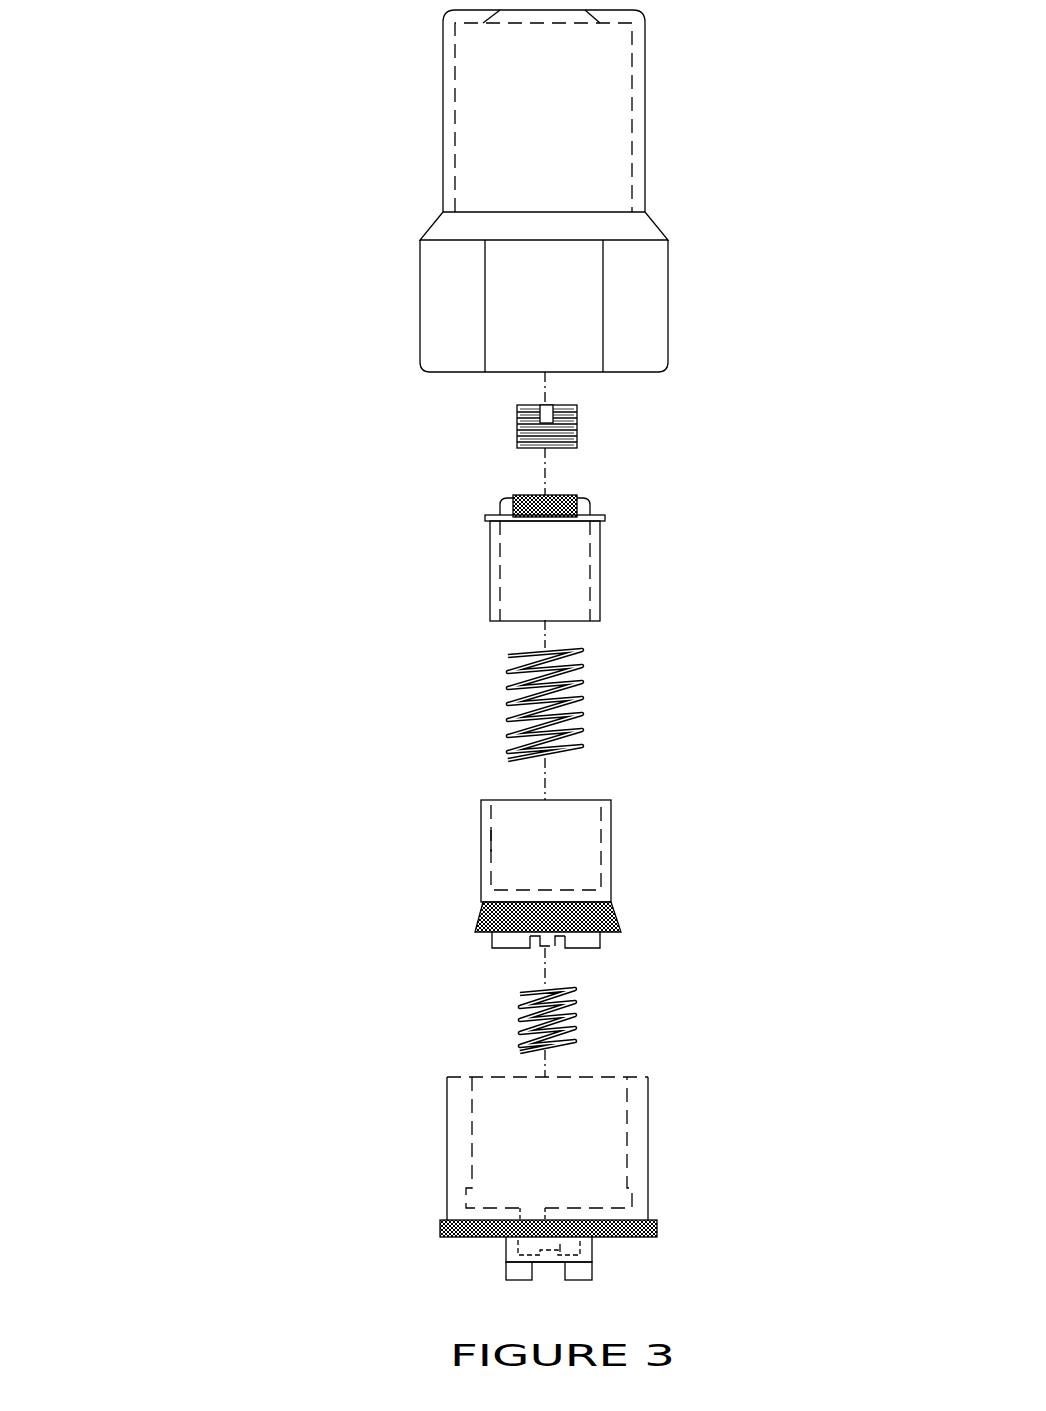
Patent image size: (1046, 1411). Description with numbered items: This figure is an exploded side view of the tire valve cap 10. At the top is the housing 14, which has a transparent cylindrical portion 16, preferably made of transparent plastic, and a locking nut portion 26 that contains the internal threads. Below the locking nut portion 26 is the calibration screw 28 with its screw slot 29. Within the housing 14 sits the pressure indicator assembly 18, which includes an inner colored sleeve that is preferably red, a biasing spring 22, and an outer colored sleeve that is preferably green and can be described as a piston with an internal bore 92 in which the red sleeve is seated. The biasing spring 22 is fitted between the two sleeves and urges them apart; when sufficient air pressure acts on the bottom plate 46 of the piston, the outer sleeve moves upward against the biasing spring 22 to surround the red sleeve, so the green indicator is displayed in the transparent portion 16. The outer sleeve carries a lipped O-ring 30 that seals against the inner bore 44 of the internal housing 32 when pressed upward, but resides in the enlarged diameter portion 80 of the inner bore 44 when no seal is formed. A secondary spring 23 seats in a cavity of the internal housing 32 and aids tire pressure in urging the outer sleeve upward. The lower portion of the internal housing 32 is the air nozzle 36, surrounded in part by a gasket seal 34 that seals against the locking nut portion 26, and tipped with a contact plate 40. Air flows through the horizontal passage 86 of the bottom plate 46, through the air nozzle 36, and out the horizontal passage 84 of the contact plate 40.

The tire valve cap 10 is at (208, 212).
The housing 14 is at (380, 253).
The transparent cylindrical portion 16 is at (615, 95).
The pressure indicator assembly 18 is at (472, 486).
The biasing spring 22 is at (600, 711).
The secondary spring 23 is at (598, 1022).
The locking nut portion 26 is at (628, 323).
The calibration screw 28 is at (577, 432).
The screw slot 29 is at (530, 403).
The lipped O-ring 30 is at (612, 918).
The internal housing 32 is at (648, 1138).
The gasket seal 34 is at (657, 1222).
The air nozzle 36 is at (515, 1250).
The contact plate 40 is at (580, 1268).
The inner bore 44 is at (486, 1140).
The bottom plate 46 is at (494, 947).
The enlarged diameter portion 80 is at (486, 1195).
The horizontal passage 84 is at (535, 1274).
The horizontal passage 86 is at (566, 953).
The internal bore 92 is at (505, 841).